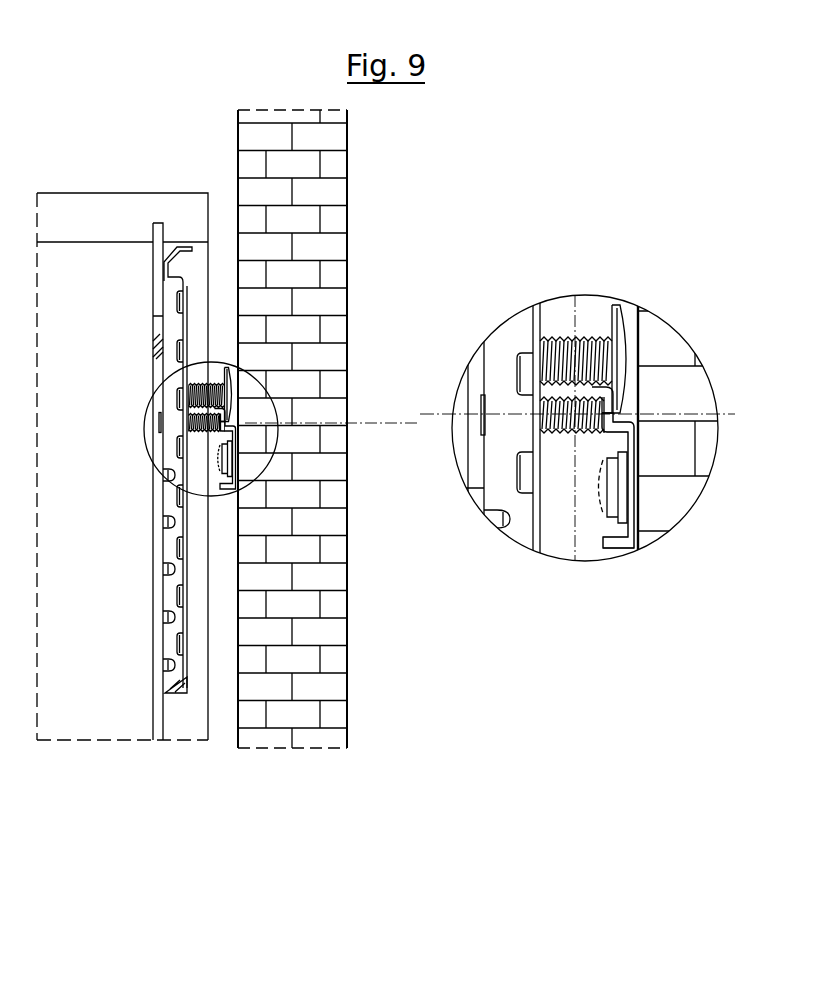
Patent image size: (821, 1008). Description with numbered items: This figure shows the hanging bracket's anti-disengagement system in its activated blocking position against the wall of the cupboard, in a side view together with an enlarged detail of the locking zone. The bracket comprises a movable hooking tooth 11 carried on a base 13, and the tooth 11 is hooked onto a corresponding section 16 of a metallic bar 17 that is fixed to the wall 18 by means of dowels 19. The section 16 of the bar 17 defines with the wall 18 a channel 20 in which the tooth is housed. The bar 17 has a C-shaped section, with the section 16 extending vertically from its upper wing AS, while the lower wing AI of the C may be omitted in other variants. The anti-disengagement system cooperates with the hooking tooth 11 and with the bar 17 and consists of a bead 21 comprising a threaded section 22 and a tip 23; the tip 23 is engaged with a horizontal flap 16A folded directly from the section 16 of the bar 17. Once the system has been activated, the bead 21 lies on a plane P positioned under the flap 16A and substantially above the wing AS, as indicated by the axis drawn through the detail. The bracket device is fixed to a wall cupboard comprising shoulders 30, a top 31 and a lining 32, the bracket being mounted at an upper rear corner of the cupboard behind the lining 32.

The hooking tooth 11 is at (236, 372).
The base 13 is at (170, 607).
The section of the bar 16 is at (218, 416).
The horizontal flap 16A is at (592, 388).
The metallic bar 17 is at (235, 500).
The wall 18 is at (281, 188).
The dowels 19 is at (227, 455).
The channel 20 is at (237, 418).
The bead 21 is at (151, 429).
The threaded section 22 is at (578, 450).
The tip 23 is at (612, 392).
The shoulders 30 is at (60, 344).
The top 31 is at (92, 226).
The lining 32 is at (153, 710).
The upper wing AS is at (240, 428).
The lower wing AI is at (609, 548).
The plane P is at (577, 414).